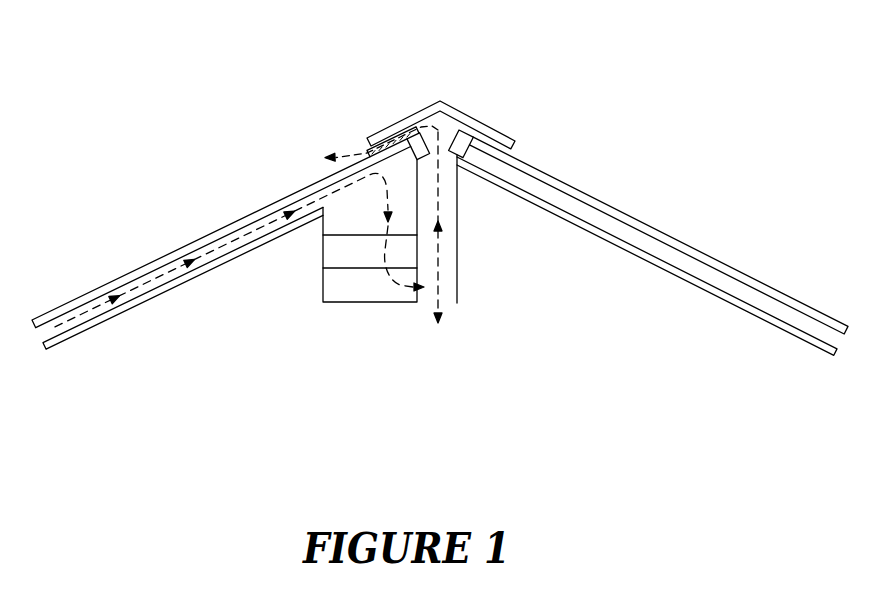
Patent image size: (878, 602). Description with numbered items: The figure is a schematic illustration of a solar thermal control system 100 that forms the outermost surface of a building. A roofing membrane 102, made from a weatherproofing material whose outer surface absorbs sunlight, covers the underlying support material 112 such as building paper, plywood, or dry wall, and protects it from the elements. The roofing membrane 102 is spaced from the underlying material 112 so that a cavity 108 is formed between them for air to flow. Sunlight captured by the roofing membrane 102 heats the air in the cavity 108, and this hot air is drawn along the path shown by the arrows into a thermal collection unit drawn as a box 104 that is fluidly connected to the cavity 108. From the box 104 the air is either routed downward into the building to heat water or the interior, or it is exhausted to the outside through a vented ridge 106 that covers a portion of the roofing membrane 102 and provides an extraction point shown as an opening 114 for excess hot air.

The solar thermal control system 100 is at (197, 60).
The roofing membrane 102 is at (362, 141).
The thermal collection unit 104 is at (457, 323).
The vented ridge 106 is at (517, 80).
The cavity 108 is at (268, 223).
The underlying support material 112 is at (133, 303).
The opening 114 is at (360, 141).